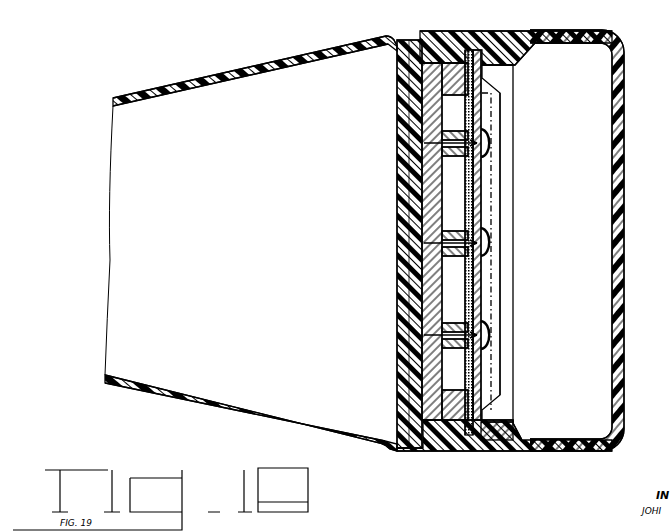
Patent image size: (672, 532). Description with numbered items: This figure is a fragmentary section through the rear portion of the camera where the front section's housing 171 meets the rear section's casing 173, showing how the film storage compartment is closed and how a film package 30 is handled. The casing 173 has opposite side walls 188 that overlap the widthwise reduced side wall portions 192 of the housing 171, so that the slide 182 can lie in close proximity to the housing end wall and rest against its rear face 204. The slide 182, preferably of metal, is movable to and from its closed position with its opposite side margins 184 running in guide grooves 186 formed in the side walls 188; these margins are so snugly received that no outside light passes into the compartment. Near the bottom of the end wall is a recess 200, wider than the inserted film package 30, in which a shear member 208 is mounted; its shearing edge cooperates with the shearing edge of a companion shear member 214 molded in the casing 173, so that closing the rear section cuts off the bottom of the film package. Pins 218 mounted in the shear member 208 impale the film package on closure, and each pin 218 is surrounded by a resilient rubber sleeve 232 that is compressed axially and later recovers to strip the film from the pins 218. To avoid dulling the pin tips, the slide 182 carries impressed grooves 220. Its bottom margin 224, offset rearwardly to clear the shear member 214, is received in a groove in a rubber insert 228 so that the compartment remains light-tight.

The film package 30 is at (454, 199).
The housing 171 is at (244, 62).
The casing 173 is at (556, 36).
The slide 182 is at (478, 187).
The side margins 184 is at (472, 50).
The guide grooves 186 is at (481, 62).
The side walls 188 is at (456, 36).
The side wall portions 192 is at (430, 83).
The recess 200 is at (420, 282).
The rear face 204 is at (430, 101).
The shear member 208 is at (436, 223).
The shear member 214 is at (492, 113).
The pins 218 is at (426, 139).
The impressed grooves 220 is at (491, 142).
The bottom margin 224 is at (497, 215).
The insert 228 is at (508, 80).
The sleeve 232 is at (441, 151).